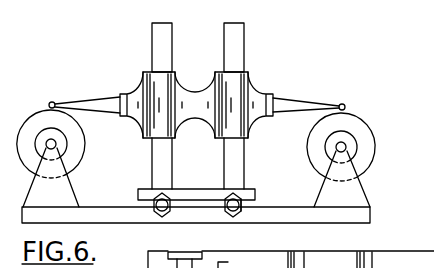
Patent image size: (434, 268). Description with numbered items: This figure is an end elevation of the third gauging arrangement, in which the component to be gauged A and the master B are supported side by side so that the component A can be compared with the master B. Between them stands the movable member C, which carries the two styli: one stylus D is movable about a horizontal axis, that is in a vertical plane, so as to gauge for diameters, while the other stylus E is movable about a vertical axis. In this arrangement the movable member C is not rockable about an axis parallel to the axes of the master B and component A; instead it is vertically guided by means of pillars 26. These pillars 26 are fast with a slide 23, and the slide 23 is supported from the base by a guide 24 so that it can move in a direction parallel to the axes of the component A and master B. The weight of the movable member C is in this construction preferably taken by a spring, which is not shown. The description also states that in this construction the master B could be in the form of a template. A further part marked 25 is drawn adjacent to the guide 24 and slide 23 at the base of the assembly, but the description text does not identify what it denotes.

The component to be gauged A is at (73, 148).
The master B is at (365, 150).
The movable member C is at (213, 98).
The stylus D is at (102, 107).
The stylus E is at (290, 108).
The slide 23 is at (208, 195).
The guide 24 is at (226, 211).
The roller bracket 25 is at (232, 205).
The pillars 26 is at (236, 36).